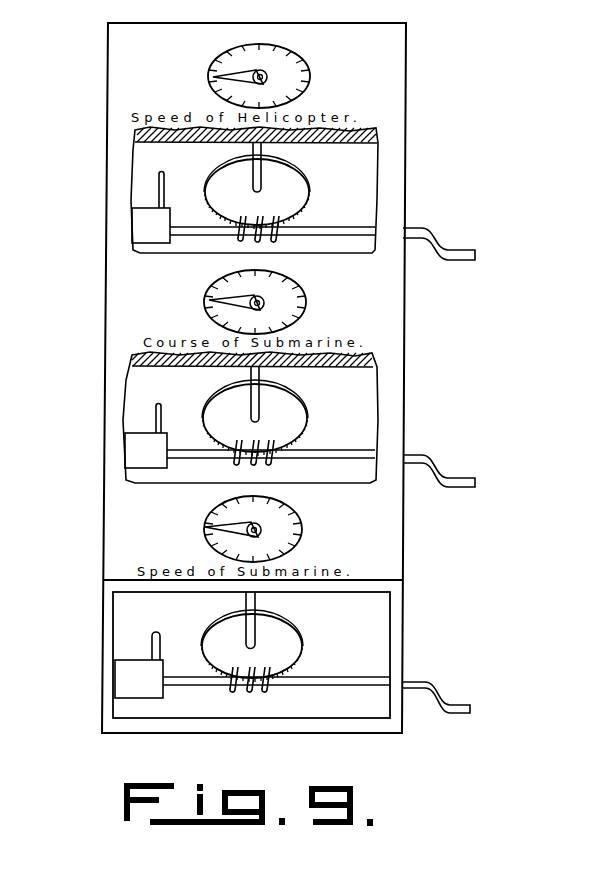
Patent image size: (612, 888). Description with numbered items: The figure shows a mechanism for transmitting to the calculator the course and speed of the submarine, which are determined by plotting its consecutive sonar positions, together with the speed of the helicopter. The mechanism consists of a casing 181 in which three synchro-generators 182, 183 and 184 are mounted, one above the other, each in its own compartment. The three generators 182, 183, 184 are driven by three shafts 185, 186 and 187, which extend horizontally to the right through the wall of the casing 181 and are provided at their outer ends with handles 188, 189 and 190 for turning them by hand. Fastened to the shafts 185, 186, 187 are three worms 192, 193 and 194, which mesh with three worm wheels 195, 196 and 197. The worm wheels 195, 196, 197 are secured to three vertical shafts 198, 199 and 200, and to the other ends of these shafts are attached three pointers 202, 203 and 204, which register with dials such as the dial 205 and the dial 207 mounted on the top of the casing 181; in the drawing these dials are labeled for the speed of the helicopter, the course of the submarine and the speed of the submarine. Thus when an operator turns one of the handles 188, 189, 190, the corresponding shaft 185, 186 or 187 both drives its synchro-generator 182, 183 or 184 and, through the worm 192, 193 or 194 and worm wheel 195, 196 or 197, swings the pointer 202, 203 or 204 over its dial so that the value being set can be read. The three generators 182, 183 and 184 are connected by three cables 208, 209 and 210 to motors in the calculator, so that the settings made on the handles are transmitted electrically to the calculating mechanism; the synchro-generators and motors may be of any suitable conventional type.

The casing 181 is at (110, 723).
The synchro-generator 182 is at (153, 695).
The synchro-generator 183 is at (163, 461).
The synchro-generator 184 is at (158, 232).
The shaft 185 is at (320, 680).
The shaft 186 is at (335, 456).
The shaft 187 is at (335, 231).
The handle 188 is at (460, 705).
The handle 189 is at (457, 478).
The handle 190 is at (465, 250).
The worm 192 is at (262, 695).
The worm 193 is at (270, 462).
The worm 194 is at (272, 239).
The worm wheel 195 is at (296, 641).
The worm wheel 196 is at (290, 412).
The worm wheel 197 is at (292, 178).
The shaft 198 is at (246, 605).
The shaft 199 is at (251, 374).
The shaft 200 is at (253, 152).
The pointer 202 is at (214, 512).
The pointer 203 is at (216, 284).
The pointer 204 is at (227, 60).
The dial 205 is at (307, 297).
The dial 207 is at (310, 72).
The cable 208 is at (152, 640).
The cable 209 is at (163, 404).
The cable 210 is at (157, 181).